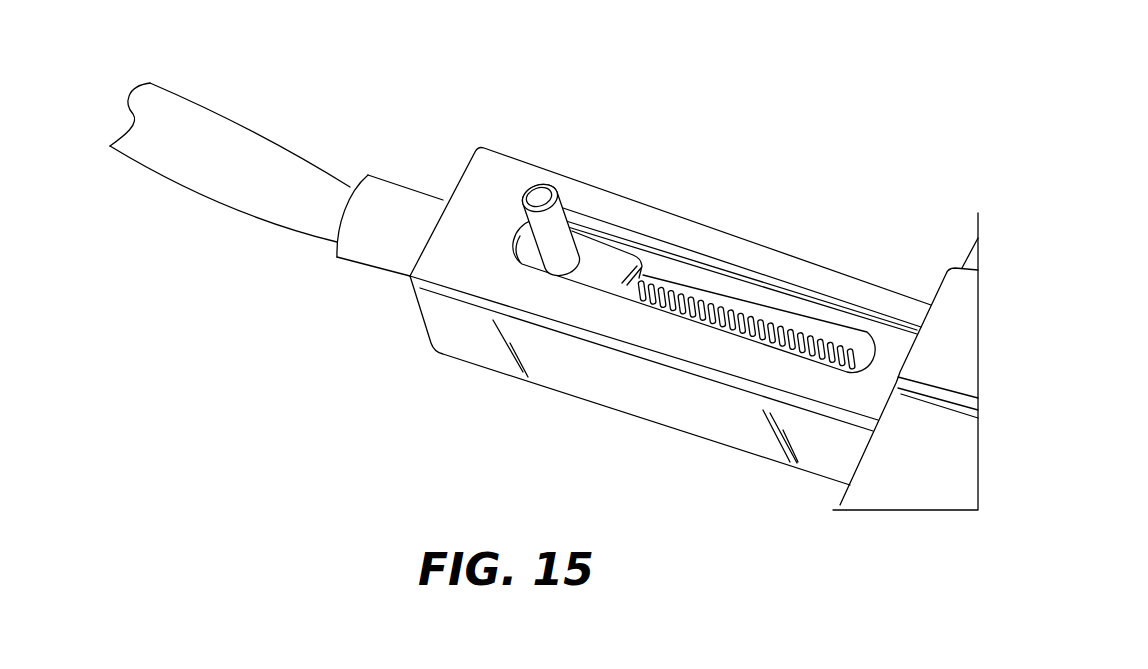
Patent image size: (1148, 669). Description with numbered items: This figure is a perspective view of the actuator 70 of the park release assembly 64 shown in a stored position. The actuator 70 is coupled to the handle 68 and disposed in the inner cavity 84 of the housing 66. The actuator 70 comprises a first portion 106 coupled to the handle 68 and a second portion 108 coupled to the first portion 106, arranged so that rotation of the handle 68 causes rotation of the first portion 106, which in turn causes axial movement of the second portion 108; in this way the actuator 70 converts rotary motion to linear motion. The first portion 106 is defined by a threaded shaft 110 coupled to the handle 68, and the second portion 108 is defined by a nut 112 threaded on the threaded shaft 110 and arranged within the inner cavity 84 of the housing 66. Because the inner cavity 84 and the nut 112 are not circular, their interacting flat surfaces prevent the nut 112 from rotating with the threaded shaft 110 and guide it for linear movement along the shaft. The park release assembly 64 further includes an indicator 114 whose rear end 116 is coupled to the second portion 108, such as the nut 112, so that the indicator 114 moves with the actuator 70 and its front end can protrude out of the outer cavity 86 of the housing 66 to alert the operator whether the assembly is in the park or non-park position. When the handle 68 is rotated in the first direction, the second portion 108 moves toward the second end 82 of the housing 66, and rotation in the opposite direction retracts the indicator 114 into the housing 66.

The park release assembly 64 is at (490, 80).
The housing 66 is at (905, 414).
The handle 68 is at (905, 257).
The actuator 70 is at (694, 282).
The second end 82 is at (395, 333).
The inner cavity 84 is at (533, 397).
The outer cavity 86 is at (933, 473).
The first portion 106 is at (747, 302).
The second portion 108 is at (627, 255).
The threaded shaft 110 is at (717, 318).
The nut 112 is at (597, 275).
The indicator 114 is at (535, 175).
The rear end 116 is at (507, 223).